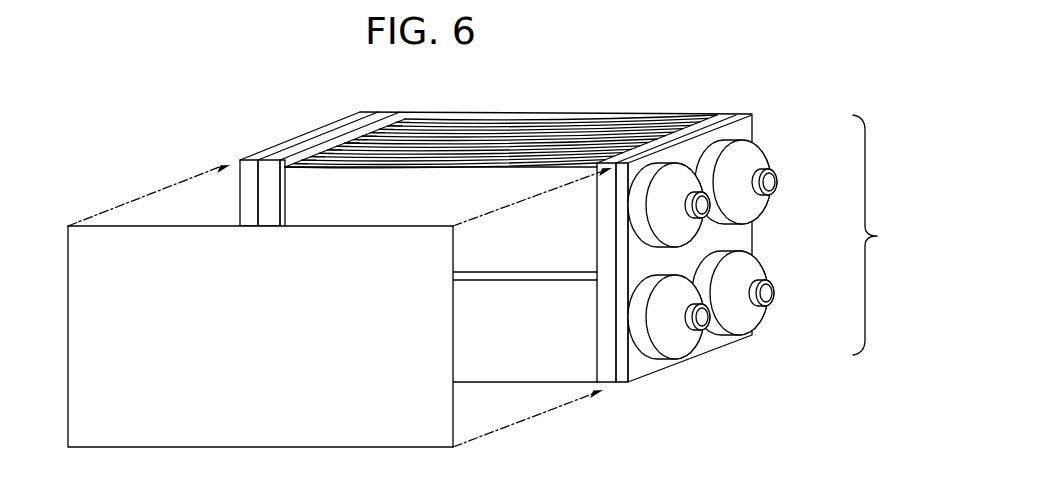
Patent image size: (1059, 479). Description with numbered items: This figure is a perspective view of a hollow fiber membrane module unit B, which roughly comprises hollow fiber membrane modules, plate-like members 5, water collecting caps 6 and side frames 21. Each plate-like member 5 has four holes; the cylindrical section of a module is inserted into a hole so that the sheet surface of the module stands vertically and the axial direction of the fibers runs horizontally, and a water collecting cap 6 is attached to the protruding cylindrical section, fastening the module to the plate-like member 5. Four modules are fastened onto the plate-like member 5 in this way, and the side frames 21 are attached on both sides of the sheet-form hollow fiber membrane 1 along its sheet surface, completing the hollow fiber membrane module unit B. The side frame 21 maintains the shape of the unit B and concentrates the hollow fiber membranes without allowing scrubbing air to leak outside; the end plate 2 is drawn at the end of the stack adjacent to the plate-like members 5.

The sheet-form hollow fiber membrane 1 is at (447, 126).
The end plate 2 is at (732, 113).
The plate-like member 5 is at (250, 165).
The water collecting cap 6 is at (750, 160).
The side frame 21 is at (90, 268).
The hollow fiber membrane module unit B is at (876, 235).